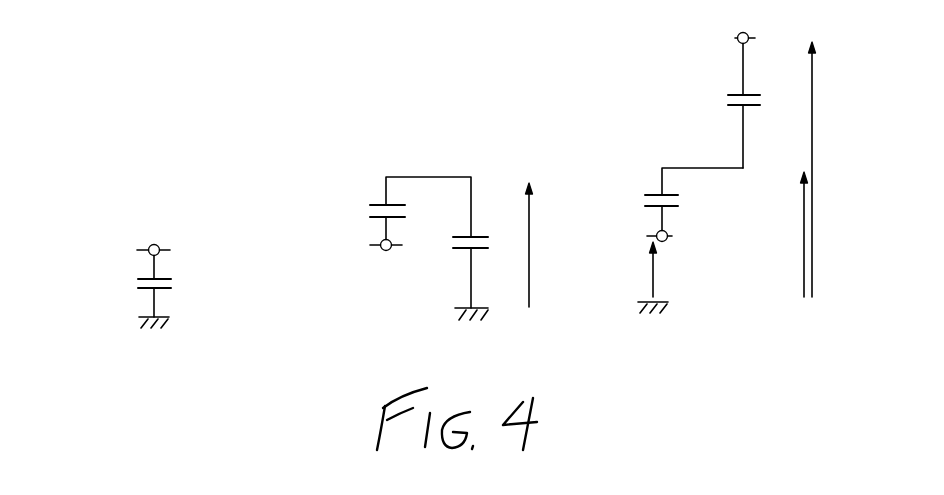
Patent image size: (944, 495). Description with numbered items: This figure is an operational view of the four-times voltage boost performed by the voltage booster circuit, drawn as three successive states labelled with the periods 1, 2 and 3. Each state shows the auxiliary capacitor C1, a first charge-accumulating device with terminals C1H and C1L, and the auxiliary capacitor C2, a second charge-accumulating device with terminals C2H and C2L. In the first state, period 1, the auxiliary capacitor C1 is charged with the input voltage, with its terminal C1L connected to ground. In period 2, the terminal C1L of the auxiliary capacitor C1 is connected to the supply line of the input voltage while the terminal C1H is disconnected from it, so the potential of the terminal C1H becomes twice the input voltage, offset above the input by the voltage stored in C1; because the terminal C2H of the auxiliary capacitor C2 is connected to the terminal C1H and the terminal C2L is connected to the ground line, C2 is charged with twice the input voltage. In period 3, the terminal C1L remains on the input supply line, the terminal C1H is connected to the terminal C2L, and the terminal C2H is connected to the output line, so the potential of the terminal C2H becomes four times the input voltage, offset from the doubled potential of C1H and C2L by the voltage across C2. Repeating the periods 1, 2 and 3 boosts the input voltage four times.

The period ① 1 is at (152, 181).
The period ② 2 is at (433, 173).
The period ③ 3 is at (712, 165).
The auxiliary capacitor C1 is at (680, 203).
The terminal C1H is at (676, 184).
The terminal C1L is at (676, 219).
The auxiliary capacitor C2 is at (723, 106).
The terminal C2H is at (730, 70).
The terminal C2L is at (730, 136).